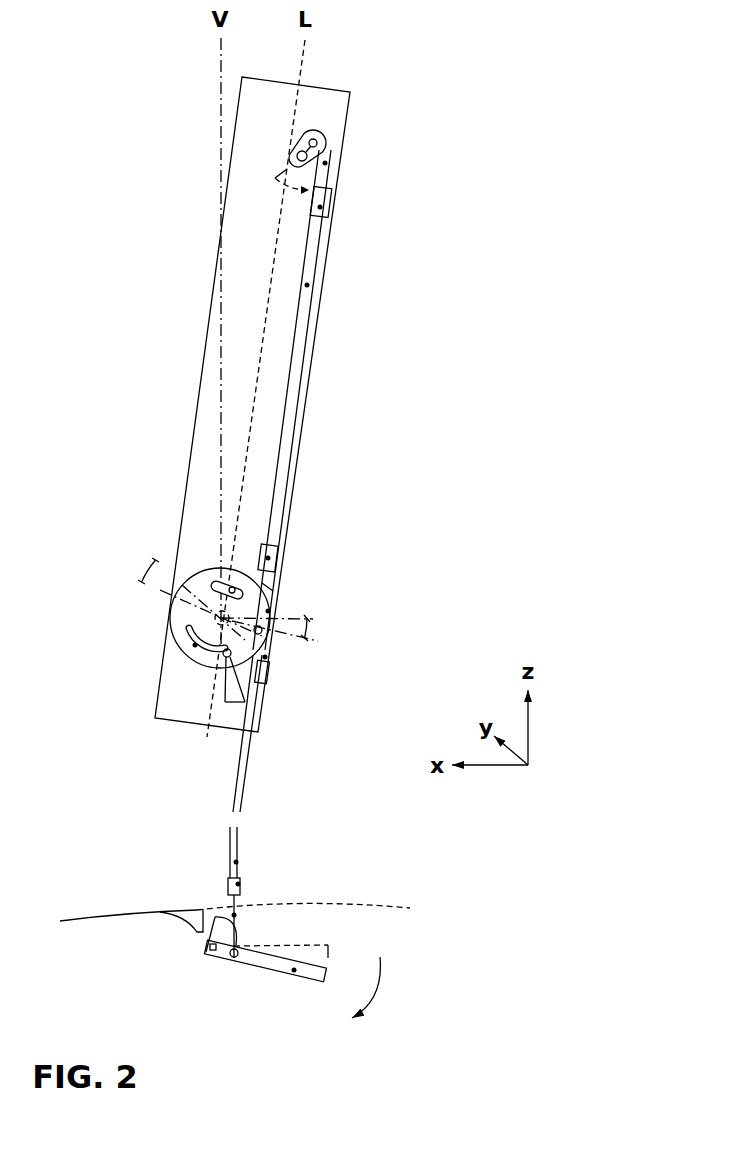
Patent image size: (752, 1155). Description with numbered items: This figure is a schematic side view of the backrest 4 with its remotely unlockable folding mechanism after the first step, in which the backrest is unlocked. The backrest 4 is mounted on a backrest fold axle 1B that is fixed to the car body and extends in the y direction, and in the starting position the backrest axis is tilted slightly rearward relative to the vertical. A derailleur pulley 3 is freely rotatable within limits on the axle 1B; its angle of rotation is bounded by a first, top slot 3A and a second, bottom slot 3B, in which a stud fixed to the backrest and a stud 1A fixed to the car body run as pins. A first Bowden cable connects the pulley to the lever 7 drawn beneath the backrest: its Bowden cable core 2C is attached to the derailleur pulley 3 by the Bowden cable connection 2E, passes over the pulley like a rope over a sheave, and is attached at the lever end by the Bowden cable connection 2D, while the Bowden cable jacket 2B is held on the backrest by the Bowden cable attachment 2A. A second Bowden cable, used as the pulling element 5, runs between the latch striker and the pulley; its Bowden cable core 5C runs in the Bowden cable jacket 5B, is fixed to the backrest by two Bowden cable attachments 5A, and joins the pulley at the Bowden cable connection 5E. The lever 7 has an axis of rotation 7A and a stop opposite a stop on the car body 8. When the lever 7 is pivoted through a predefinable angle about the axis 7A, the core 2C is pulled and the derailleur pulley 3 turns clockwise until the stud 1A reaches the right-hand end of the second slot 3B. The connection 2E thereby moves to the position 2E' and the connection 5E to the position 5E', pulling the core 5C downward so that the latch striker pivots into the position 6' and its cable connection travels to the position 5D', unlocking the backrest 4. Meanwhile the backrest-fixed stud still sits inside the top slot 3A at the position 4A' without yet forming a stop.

The stud fixed to the car body 1A is at (224, 661).
The backrest fold axle 1B is at (200, 617).
The Bowden cable attachment 2A is at (268, 680).
The Bowden cable jacket 2B is at (236, 862).
The Bowden cable core 2C is at (265, 657).
The Bowden cable connection 2D is at (234, 958).
The Bowden cable connection 2E is at (182, 597).
The position of Bowden cable connection 2E' is at (179, 585).
The derailleur pulley 3 is at (268, 611).
The first slot 3A is at (259, 584).
The second slot 3B is at (195, 645).
The backrest 4 is at (204, 424).
The position of stud fixed to the backrest 4A' is at (173, 525).
The pulling element 5 is at (299, 418).
The Bowden cable attachments 5A is at (320, 207).
The Bowden cable jacket 5B is at (307, 285).
The Bowden cable core 5C is at (325, 163).
The position of Bowden cable connection 5D' is at (360, 151).
The Bowden cable connection 5E is at (289, 623).
The position of Bowden cable connection 5E' is at (296, 640).
The position of latch striker 6' is at (348, 144).
The lever 7 is at (294, 970).
The axis of rotation 7A is at (213, 950).
The car body 8 is at (177, 911).